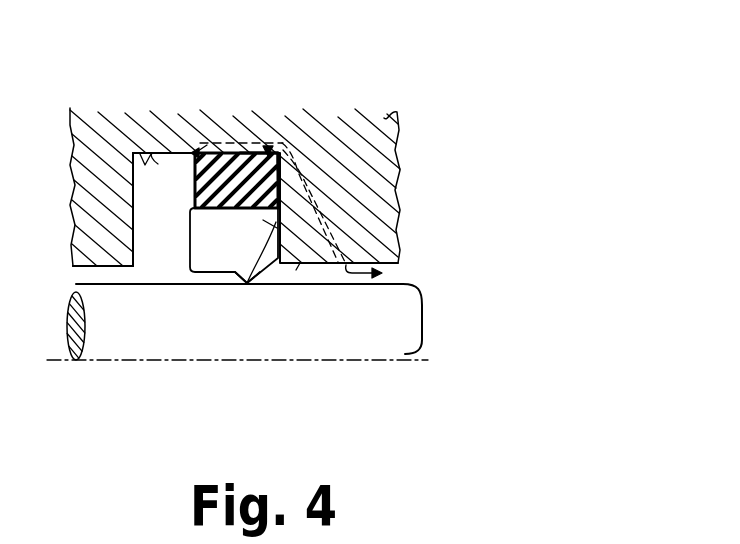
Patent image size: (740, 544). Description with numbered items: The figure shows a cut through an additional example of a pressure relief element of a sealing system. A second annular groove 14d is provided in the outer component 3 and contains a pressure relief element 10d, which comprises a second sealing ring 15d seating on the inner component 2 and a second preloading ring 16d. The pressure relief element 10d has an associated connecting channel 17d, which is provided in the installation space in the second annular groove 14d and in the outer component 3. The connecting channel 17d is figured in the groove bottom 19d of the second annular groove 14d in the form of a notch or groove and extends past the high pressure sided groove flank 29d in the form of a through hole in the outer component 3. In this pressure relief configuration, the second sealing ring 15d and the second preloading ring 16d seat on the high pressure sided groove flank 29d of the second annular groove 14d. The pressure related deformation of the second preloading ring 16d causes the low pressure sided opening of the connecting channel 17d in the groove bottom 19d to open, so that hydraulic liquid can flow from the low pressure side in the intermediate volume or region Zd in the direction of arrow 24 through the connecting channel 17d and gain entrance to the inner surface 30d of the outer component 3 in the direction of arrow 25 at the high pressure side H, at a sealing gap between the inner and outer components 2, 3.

The outer component 3 is at (378, 123).
The inner component 2 is at (398, 342).
The pressure relief element 10d is at (249, 146).
The second annular groove 14d is at (108, 124).
The second sealing ring 15d is at (205, 248).
The second preloading ring 16d is at (268, 148).
The connecting channel 17d is at (290, 148).
The groove bottom 19d is at (158, 164).
The arrow 24 is at (186, 168).
The arrow 25 is at (350, 284).
The high pressure sided groove flank 29d is at (247, 283).
The inner surface 30d is at (300, 265).
The high pressure side H is at (408, 268).
The intermediate volume or region Zd is at (125, 277).